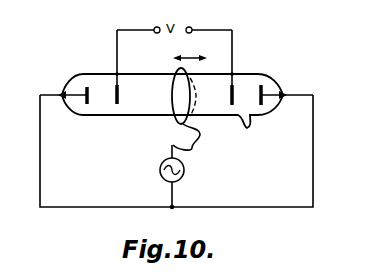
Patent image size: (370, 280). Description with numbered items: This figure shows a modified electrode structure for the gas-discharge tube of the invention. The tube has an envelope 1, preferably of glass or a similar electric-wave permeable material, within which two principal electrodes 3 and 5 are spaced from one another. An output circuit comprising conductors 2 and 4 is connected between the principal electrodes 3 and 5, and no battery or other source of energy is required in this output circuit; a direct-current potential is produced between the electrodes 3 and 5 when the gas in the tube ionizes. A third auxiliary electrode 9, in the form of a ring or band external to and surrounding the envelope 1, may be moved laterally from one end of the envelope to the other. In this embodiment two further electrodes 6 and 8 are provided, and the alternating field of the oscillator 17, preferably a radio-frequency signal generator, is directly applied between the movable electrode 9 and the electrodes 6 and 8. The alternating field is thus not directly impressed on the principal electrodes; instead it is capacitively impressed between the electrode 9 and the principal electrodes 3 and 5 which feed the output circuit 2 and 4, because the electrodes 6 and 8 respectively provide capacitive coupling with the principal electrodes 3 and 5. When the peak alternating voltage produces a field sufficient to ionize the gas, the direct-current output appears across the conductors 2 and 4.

The envelope 1 is at (115, 115).
The conductor 2 is at (152, 28).
The principal electrode 3 is at (114, 89).
The conductor 4 is at (211, 30).
The principal electrode 5 is at (236, 90).
The further electrode 6 is at (82, 90).
The further electrode 8 is at (266, 88).
The third auxiliary electrode 9 is at (175, 122).
The alternating-current voltage oscillator 17 is at (160, 170).